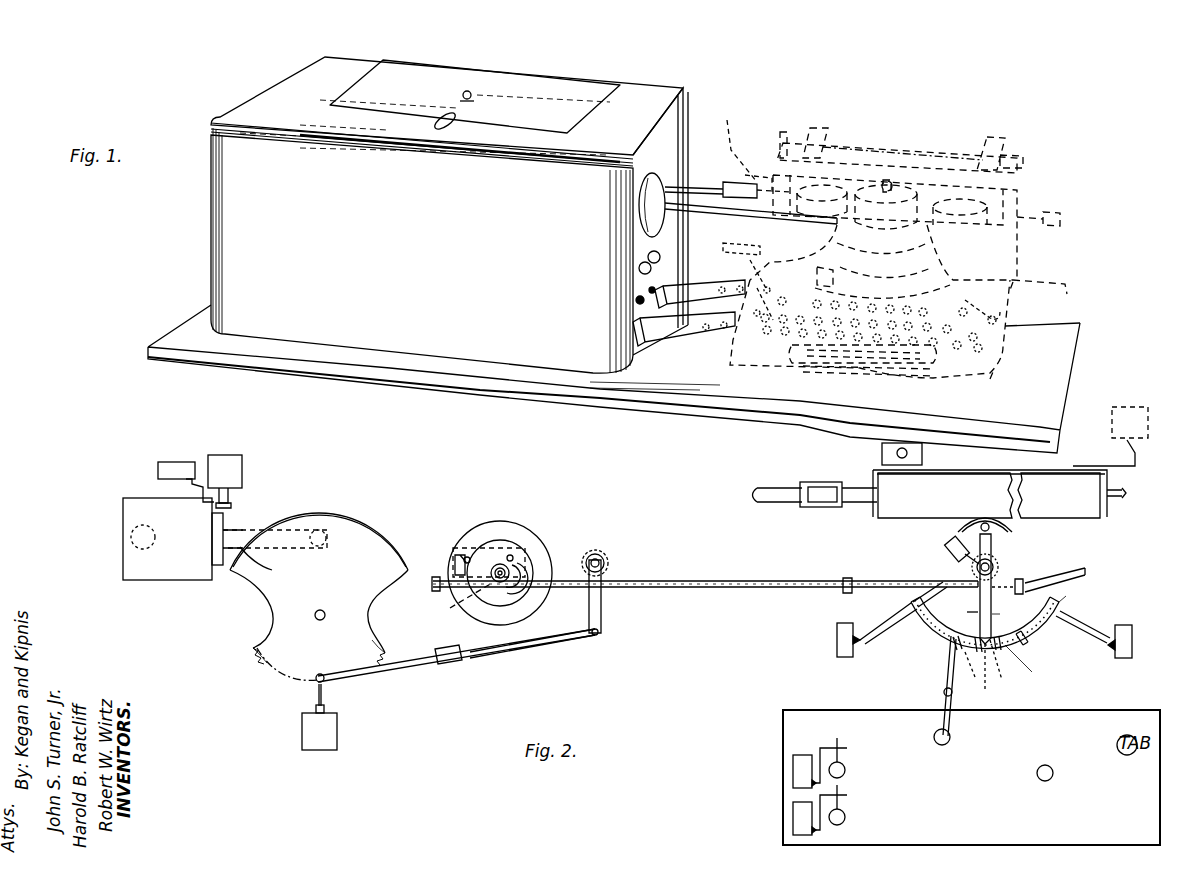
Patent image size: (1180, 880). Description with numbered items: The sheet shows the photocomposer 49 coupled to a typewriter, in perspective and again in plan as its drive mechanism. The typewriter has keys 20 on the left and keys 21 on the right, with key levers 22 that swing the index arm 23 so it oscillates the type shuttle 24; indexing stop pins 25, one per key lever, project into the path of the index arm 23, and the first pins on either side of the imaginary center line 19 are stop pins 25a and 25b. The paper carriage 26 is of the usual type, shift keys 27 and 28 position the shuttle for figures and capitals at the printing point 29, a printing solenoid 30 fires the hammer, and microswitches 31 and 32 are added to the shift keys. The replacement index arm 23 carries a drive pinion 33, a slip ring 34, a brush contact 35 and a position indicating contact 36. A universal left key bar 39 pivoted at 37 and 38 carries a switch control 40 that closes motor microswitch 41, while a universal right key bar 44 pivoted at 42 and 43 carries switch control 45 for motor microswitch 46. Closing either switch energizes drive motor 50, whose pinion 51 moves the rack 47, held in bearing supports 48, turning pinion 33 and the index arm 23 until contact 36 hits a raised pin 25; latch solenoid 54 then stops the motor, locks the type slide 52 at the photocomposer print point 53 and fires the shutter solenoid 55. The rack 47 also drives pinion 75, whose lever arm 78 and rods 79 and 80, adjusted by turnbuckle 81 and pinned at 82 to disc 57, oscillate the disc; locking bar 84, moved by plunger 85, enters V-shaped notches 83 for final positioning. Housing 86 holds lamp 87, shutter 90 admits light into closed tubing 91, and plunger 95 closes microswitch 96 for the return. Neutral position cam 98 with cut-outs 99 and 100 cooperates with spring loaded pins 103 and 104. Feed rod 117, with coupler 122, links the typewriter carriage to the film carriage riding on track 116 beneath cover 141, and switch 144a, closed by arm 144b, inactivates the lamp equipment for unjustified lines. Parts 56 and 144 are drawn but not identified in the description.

In FIG. 2, the center line 19 is at (987, 686).
In FIG. 1, the key 20 is at (785, 334).
In FIG. 2, the key 20 is at (941, 746).
In FIG. 1, the key 21 is at (1013, 304).
In FIG. 2, the key 21 is at (1047, 782).
In FIG. 2, the key lever 22 is at (948, 668).
In FIG. 2, the index arm 23 is at (992, 600).
In FIG. 2, the type shuttle 24 is at (1012, 532).
In FIG. 2, the indexing stop pin 25 is at (1025, 644).
In FIG. 2, the stop pin 25a is at (970, 662).
In FIG. 2, the stop pin 25b is at (1032, 662).
In FIG. 2, the paper carriage 26 is at (884, 514).
In FIG. 1, the shift key 27 is at (765, 287).
In FIG. 2, the shift key 27 is at (846, 771).
In FIG. 1, the shift key 28 is at (722, 349).
In FIG. 2, the shift key 28 is at (846, 818).
In FIG. 2, the printing point 29 is at (990, 516).
In FIG. 2, the printing solenoid 30 is at (897, 453).
In FIG. 2, the microswitch 31 is at (793, 777).
In FIG. 2, the microswitch 32 is at (793, 822).
In FIG. 2, the drive pinion 33 is at (996, 566).
In FIG. 2, the slip ring 34 is at (996, 574).
In FIG. 2, the electrical brush contact 35 is at (951, 546).
In FIG. 2, the position indicating electrical contact 36 is at (1005, 675).
In FIG. 2, the pivot 37 is at (943, 586).
In FIG. 2, the pivot 38 is at (964, 602).
In FIG. 2, the universal left key bar 39 is at (926, 634).
In FIG. 2, the switch control 40 is at (858, 648).
In FIG. 2, the motor microswitch 41 is at (837, 640).
In FIG. 2, the pivot 42 is at (1005, 620).
In FIG. 2, the pivot 43 is at (1055, 580).
In FIG. 2, the universal right key bar 44 is at (1066, 602).
In FIG. 2, the switch control 45 is at (1104, 650).
In FIG. 2, the motor microswitch 46 is at (1132, 650).
In FIG. 1, the rack 47 is at (745, 212).
In FIG. 2, the rack 47 is at (720, 578).
In FIG. 2, the bearing support 48 is at (436, 577).
In FIG. 1, the photocomposer 49 is at (197, 238).
In FIG. 2, the drive motor 50 is at (497, 566).
In FIG. 2, the pinion 51 is at (452, 607).
In FIG. 2, the type slide 52 is at (368, 534).
In FIG. 2, the photocomposer print point 53 is at (320, 515).
In FIG. 2, the latch solenoid 54 is at (325, 740).
In FIG. 2, the shutter solenoid 55 is at (231, 458).
In FIG. 2, the cam lobe 56 is at (392, 603).
In FIG. 2, the disc 57 is at (319, 583).
In FIG. 2, the drive pinion 75 is at (604, 557).
In FIG. 2, the lever arm 78 is at (602, 610).
In FIG. 2, the rod 79 is at (516, 650).
In FIG. 2, the rod 80 is at (404, 676).
In FIG. 2, the turnbuckle 81 is at (450, 664).
In FIG. 2, the pin 82 is at (320, 674).
In FIG. 2, the V-shaped notch 83 is at (263, 667).
In FIG. 2, the locking bar 84 is at (324, 697).
In FIG. 2, the plunger 85 is at (325, 710).
In FIG. 2, the light house structure 86 is at (198, 545).
In FIG. 2, the lamp 87 is at (148, 528).
In FIG. 2, the shutter 90 is at (223, 528).
In FIG. 2, the closed tubing 91 is at (250, 532).
In FIG. 2, the plunger 95 is at (230, 495).
In FIG. 2, the microswitch 96 is at (185, 482).
In FIG. 2, the neutral position cam 98 is at (507, 537).
In FIG. 2, the cut-out 99 is at (490, 612).
In FIG. 2, the cut-out area 100 is at (520, 570).
In FIG. 2, the spring loaded pin 103 is at (464, 555).
In FIG. 2, the spring loaded pin 104 is at (516, 552).
In FIG. 1, the track 116 is at (727, 124).
In FIG. 1, the feed rod 117 is at (700, 187).
In FIG. 2, the feed rod 117 is at (765, 502).
In FIG. 1, the coupler 122 is at (757, 182).
In FIG. 2, the coupler 122 is at (813, 507).
In FIG. 1, the photocomposer cover 141 is at (445, 352).
In FIG. 1, the indicator 144 is at (656, 289).
In FIG. 2, the switch 144a is at (1130, 409).
In FIG. 2, the arm 144b is at (1139, 494).